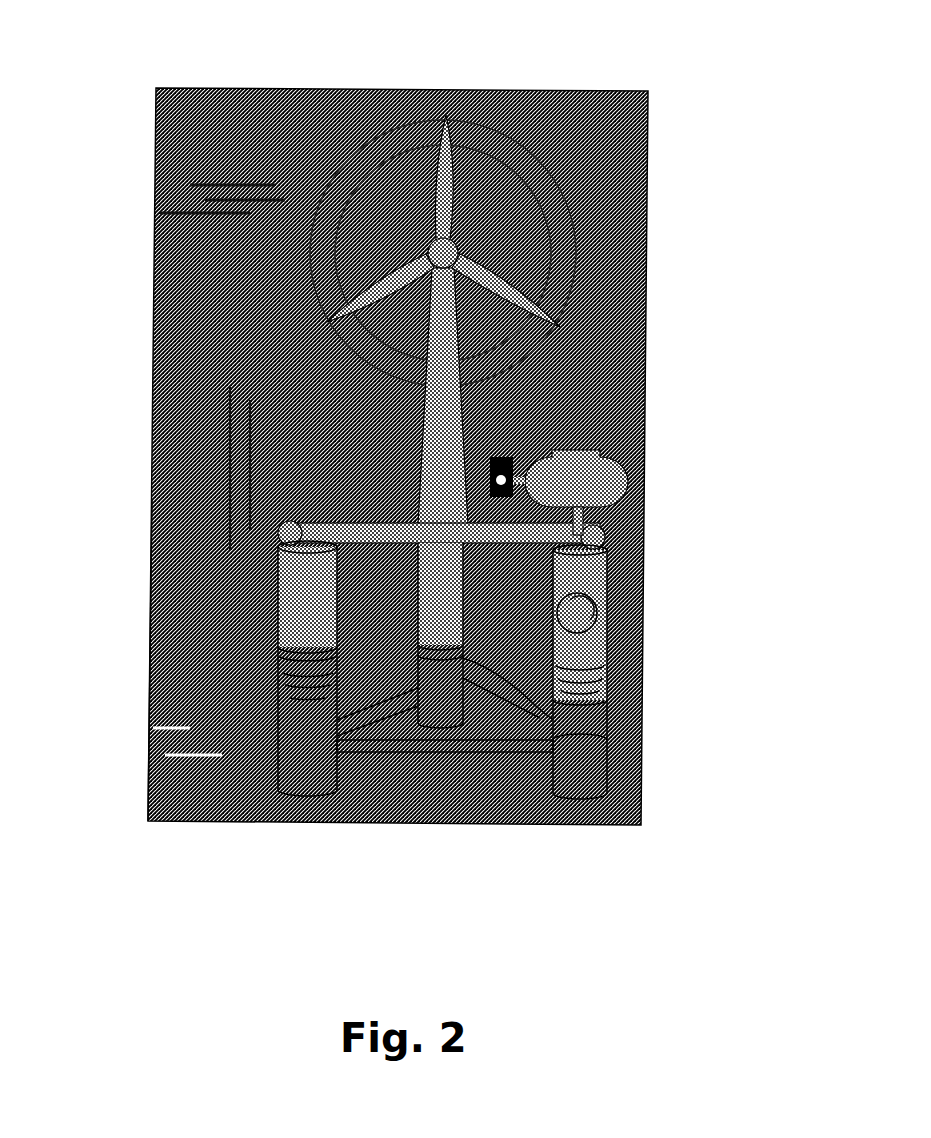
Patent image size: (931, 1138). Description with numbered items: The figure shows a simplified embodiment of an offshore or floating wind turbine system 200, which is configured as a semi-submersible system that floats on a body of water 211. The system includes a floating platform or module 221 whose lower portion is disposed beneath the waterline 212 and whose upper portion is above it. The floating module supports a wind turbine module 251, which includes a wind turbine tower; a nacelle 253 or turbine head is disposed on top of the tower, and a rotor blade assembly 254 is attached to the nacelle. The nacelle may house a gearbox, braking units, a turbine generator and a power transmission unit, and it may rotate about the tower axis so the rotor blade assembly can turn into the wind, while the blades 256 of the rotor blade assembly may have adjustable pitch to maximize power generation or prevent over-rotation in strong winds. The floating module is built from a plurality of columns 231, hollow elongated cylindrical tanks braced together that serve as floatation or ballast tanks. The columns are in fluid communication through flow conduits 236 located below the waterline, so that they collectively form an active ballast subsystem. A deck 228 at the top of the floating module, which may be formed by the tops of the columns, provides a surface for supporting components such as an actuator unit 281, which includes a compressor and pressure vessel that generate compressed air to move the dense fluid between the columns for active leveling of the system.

The offshore wind turbine system 200 is at (398, 512).
The body of water 211 is at (152, 725).
The waterline 212 is at (183, 653).
The floating platform 221 is at (622, 625).
The deck 228 is at (365, 515).
The columns 231 is at (608, 752).
The flow conduits 236 is at (442, 752).
The wind turbine module 251 is at (554, 268).
The nacelle 253 is at (427, 228).
The rotor blade assembly 254 is at (425, 235).
The blades 256 is at (460, 173).
The actuator unit 281 is at (612, 456).